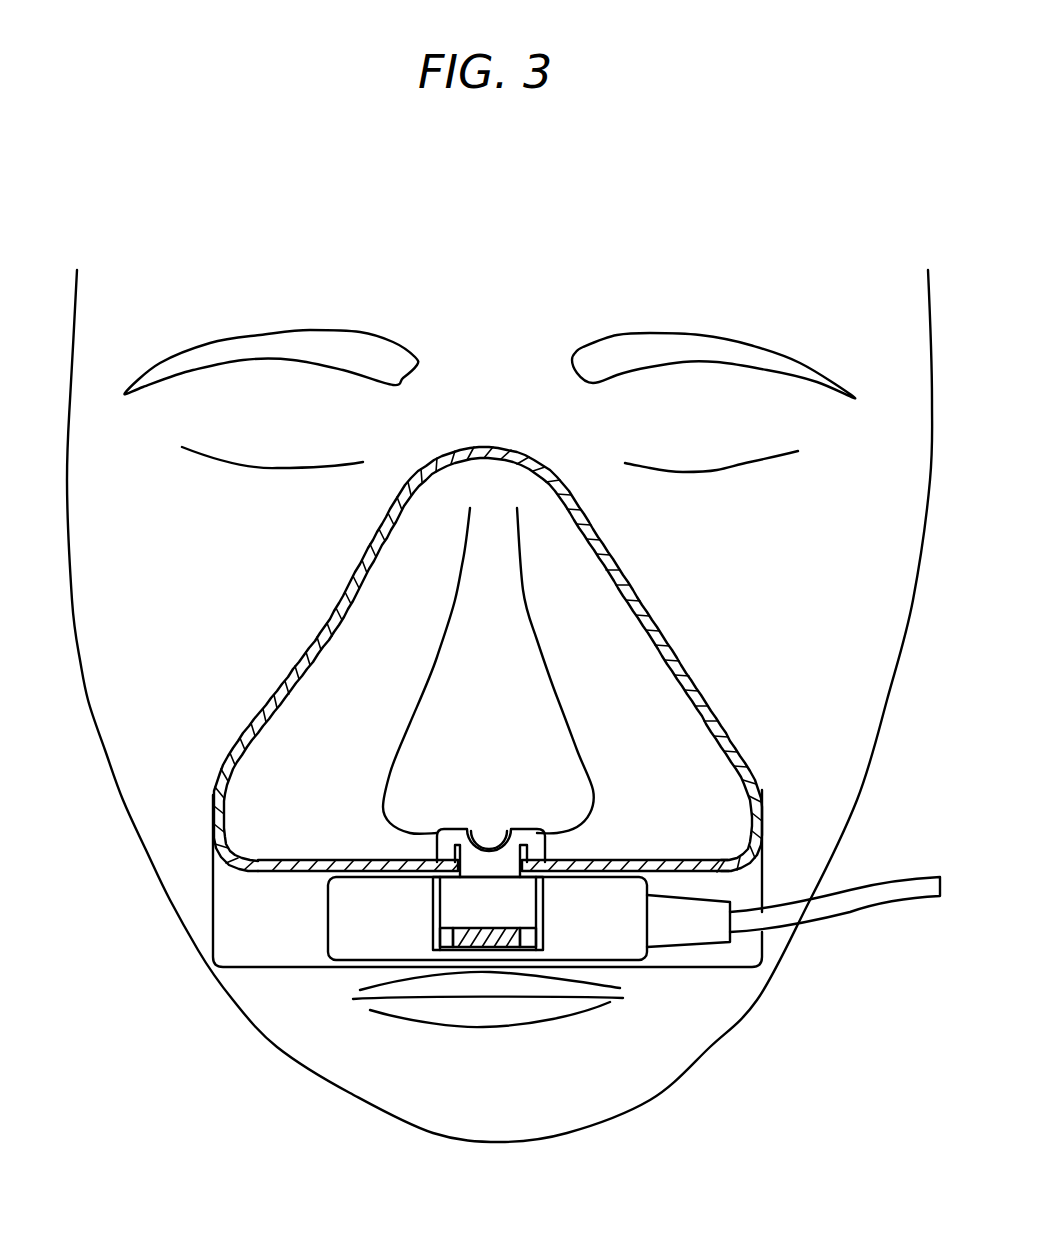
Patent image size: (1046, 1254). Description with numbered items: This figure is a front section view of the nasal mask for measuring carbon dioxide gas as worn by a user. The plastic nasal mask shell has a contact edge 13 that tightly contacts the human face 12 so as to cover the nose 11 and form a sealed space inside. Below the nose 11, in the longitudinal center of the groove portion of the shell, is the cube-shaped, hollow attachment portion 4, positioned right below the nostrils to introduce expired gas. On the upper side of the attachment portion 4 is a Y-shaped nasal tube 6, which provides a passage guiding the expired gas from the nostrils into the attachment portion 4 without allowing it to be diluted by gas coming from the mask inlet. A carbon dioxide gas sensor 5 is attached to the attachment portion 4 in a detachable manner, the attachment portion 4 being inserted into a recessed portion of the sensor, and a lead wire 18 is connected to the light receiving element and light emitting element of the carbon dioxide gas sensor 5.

The attachment portion 4 is at (458, 902).
The carbon dioxide gas sensor 5 is at (343, 920).
The Y-shaped nasal tube 6 is at (440, 842).
The nose 11 is at (530, 721).
The human face 12 is at (735, 615).
The contact edge 13 is at (341, 613).
The lead wire 18 is at (896, 893).